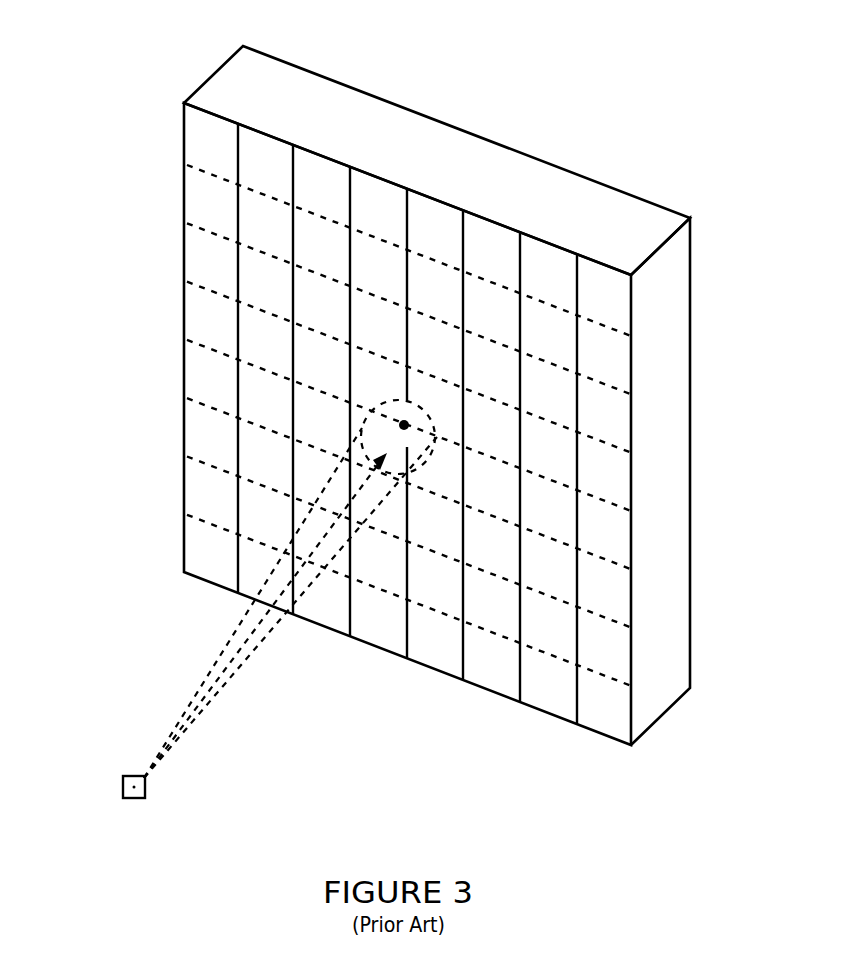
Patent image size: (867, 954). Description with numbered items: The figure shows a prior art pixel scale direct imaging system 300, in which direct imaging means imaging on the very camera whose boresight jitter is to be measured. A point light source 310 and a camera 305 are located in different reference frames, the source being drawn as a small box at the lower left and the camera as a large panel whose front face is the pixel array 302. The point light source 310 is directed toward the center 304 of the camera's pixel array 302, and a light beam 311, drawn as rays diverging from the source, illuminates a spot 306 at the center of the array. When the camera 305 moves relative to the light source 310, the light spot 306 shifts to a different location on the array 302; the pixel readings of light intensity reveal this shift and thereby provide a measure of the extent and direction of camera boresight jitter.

The pixel scale direct imaging system 300 is at (140, 304).
The pixel array 302 is at (615, 285).
The center of the pixel array 304 is at (404, 425).
The camera 305 is at (257, 78).
The spot 306 is at (430, 419).
The point light source 310 is at (145, 788).
The light beam 311 is at (216, 734).